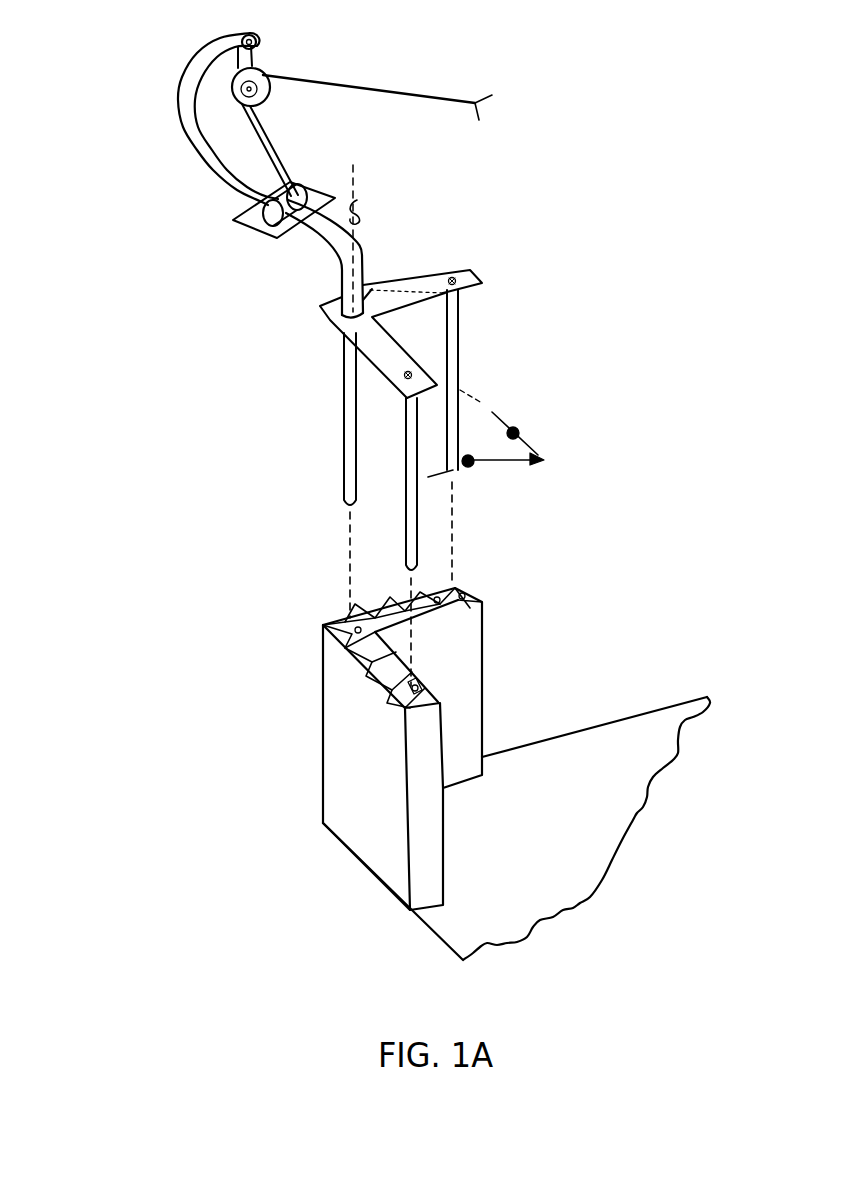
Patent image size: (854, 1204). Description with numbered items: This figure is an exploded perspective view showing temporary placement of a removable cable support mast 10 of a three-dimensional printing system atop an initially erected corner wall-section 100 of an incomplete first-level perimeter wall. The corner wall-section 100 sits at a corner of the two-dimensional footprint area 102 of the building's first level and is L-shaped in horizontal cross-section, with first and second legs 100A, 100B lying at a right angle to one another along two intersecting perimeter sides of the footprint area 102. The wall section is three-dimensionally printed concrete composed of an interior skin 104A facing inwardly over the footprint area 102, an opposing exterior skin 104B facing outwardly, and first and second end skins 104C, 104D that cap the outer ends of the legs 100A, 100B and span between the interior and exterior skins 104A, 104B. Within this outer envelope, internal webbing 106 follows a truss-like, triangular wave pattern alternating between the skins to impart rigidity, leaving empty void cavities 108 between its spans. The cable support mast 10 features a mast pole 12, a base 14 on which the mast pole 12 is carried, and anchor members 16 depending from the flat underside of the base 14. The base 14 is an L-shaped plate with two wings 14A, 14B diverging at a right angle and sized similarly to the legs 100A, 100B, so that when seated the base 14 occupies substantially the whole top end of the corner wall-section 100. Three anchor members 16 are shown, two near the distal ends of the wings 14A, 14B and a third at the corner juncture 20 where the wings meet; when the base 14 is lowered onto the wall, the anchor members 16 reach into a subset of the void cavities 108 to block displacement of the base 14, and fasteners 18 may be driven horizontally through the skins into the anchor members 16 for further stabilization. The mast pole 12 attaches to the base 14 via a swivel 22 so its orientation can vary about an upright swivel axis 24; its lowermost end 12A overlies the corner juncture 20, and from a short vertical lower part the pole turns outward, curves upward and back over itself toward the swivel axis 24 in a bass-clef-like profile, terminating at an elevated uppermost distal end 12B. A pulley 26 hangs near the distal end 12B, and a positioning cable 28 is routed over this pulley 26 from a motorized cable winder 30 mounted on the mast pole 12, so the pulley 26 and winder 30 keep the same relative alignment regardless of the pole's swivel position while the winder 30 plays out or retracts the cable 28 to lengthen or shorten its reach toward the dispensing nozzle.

The cable support mast 10 is at (189, 251).
The mast pole 12 is at (198, 156).
The lowermost end of the mast pole 12A is at (464, 292).
The uppermost distal end of the mast pole 12B is at (262, 37).
The base 14 is at (392, 284).
The first wing of the base 14A is at (421, 283).
The second wing of the base 14B is at (398, 357).
The anchor members 16 is at (455, 350).
The fasteners 18 is at (500, 433).
The corner juncture of the base 20 is at (338, 314).
The swivel 22 is at (326, 320).
The swivel axis 24 is at (359, 196).
The pulley 26 is at (265, 96).
The positioning cable 28 is at (399, 85).
The motorized cable winder 30 is at (305, 182).
The corner wall-section 100 is at (331, 842).
The first leg of the corner wall-section 100A is at (477, 652).
The second leg of the corner wall-section 100B is at (364, 742).
The footprint area 102 is at (600, 847).
The interior skin 104A is at (472, 678).
The exterior skin 104B is at (343, 689).
The first end skin 104C is at (470, 590).
The second end skin 104D is at (430, 843).
The internal webbing 106 is at (342, 635).
The void cavities 108 is at (360, 615).